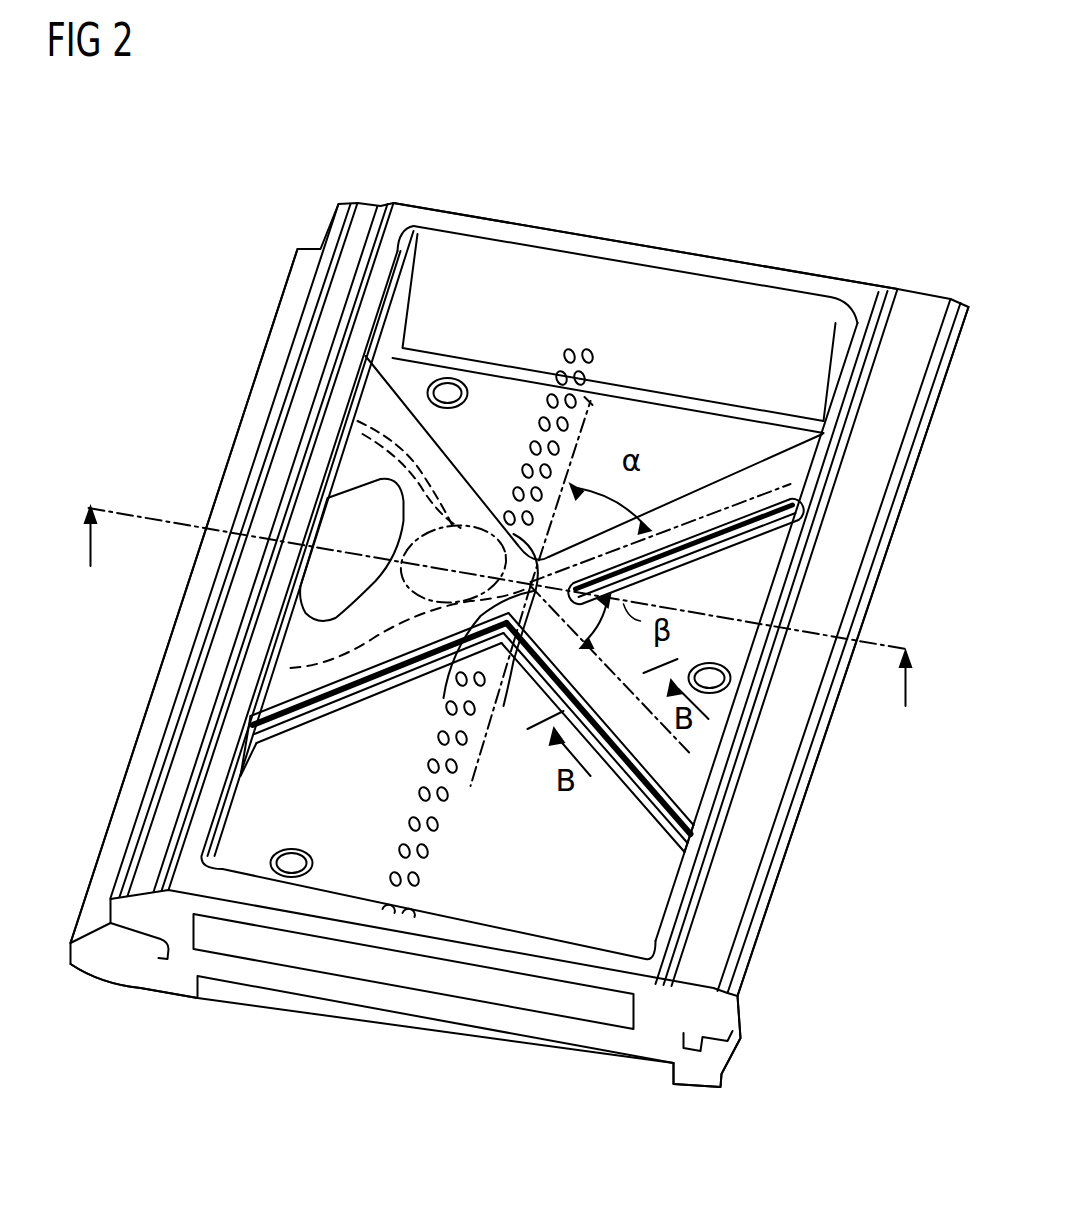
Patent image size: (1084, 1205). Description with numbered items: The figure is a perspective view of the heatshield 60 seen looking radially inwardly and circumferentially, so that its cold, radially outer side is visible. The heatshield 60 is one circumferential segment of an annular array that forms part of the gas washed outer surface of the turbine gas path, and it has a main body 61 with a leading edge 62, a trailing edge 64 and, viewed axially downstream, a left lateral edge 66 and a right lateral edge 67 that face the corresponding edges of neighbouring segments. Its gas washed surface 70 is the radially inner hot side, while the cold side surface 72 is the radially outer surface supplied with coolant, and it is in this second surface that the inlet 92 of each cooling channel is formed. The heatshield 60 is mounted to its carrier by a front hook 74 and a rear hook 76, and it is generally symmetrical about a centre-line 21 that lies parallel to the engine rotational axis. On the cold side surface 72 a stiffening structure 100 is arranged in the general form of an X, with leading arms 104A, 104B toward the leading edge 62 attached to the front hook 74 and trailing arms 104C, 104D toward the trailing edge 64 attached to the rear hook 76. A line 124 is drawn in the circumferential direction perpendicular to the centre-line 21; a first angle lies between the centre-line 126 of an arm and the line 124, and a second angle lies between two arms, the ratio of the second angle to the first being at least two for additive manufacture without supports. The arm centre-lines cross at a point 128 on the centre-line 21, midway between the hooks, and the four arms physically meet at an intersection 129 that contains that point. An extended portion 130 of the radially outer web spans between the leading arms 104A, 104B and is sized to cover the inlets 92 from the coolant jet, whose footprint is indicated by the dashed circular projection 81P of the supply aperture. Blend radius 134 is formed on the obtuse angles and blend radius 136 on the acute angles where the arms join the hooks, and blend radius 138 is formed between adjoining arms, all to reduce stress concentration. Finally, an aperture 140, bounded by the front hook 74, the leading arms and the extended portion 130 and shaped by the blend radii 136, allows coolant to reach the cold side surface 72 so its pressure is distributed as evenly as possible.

The heatshield 60 is at (180, 185).
The main body 61 is at (333, 995).
The leading edge 62 is at (120, 783).
The trailing edge 64 is at (793, 867).
The left lateral edge 66 is at (442, 207).
The right lateral edge 67 is at (158, 985).
The gas washed surface 70 is at (527, 1053).
The cold side surface 72 is at (768, 556).
The front hook 74 is at (110, 913).
The rear hook 76 is at (737, 1000).
The projection of the aperture 81P is at (403, 533).
The inlet 92 is at (433, 760).
The stiffening structure 100 is at (375, 455).
The leading arm 104A is at (323, 703).
The leading arm 104B is at (457, 443).
The trailing arm 104C is at (703, 547).
The trailing arm 104D is at (657, 767).
The line 124 is at (590, 402).
The centre-line of an arm 126 is at (727, 498).
The point 128 is at (509, 660).
The intersection 129 is at (462, 658).
The extended portion 130 is at (400, 597).
The blend radius 134 is at (682, 820).
The blend radius 136 is at (703, 745).
The blend radius 138 is at (513, 510).
The aperture 140 is at (350, 613).
The centre-line 21 is at (220, 525).